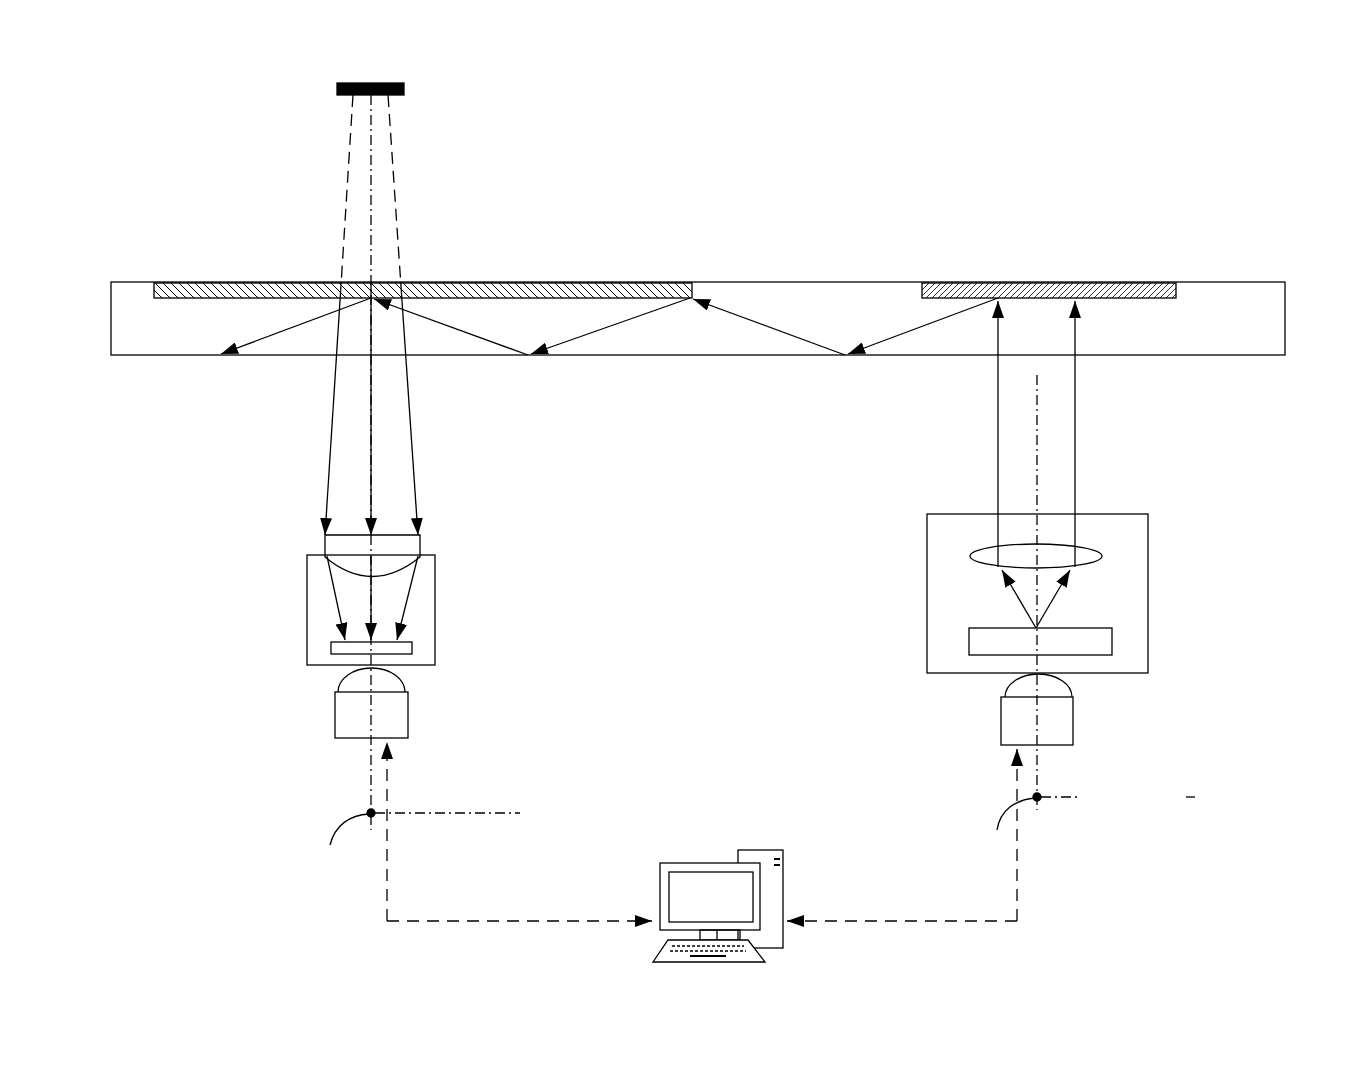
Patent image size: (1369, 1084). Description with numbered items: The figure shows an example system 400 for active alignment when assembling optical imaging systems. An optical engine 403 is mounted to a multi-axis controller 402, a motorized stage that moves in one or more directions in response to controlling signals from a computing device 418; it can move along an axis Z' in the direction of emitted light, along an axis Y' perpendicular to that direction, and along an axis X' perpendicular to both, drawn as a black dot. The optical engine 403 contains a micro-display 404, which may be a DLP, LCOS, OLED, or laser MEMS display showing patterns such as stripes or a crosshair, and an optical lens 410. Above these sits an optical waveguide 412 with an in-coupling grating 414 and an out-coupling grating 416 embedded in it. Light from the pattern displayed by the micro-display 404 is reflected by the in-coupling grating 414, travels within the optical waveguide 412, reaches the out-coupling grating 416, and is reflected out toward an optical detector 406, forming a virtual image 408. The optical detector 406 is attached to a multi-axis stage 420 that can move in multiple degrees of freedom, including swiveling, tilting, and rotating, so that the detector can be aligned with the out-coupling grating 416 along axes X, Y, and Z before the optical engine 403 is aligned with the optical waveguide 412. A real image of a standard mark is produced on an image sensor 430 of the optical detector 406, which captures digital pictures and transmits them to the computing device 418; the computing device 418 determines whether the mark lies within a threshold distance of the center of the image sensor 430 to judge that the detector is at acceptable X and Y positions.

The example system 400 is at (199, 65).
The multi-axis controller 402 is at (1063, 745).
The optical engine 403 is at (1027, 487).
The micro-display 404 is at (959, 609).
The optical detector 406 is at (442, 599).
The virtual image 408 is at (385, 83).
The optical lens 410 is at (1103, 558).
The optical waveguide 412 is at (1285, 322).
The in-coupling grating 414 is at (985, 282).
The out-coupling grating 416 is at (505, 282).
The computing device 418 is at (702, 858).
The multi-axis stage 420 is at (425, 794).
The image sensor 430 is at (412, 652).